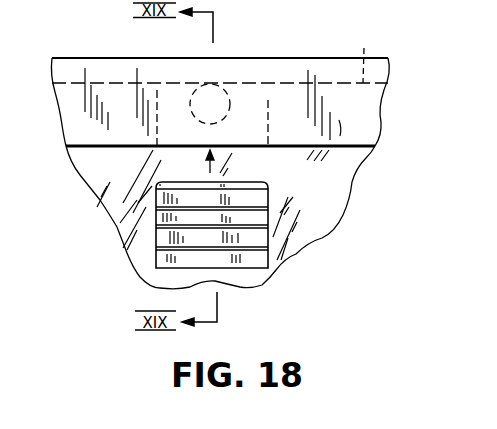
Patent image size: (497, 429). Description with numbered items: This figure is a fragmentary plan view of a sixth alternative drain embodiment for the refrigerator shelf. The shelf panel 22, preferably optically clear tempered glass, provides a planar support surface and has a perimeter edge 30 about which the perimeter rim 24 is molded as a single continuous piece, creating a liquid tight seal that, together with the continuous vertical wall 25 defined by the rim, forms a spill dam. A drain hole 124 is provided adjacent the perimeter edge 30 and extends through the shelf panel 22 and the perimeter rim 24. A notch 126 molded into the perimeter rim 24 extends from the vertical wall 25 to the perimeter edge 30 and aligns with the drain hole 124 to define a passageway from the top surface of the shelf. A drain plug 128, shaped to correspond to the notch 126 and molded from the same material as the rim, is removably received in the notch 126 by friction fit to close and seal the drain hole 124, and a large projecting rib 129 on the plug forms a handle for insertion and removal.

The shelf panel 22 is at (349, 189).
The perimeter rim 24 is at (378, 135).
The vertical wall 25 is at (98, 148).
The perimeter edge 30 is at (364, 53).
The drain hole 124 is at (216, 100).
The notch 126 is at (255, 105).
The drain plug 128 is at (262, 184).
The projecting rib 129 is at (260, 263).